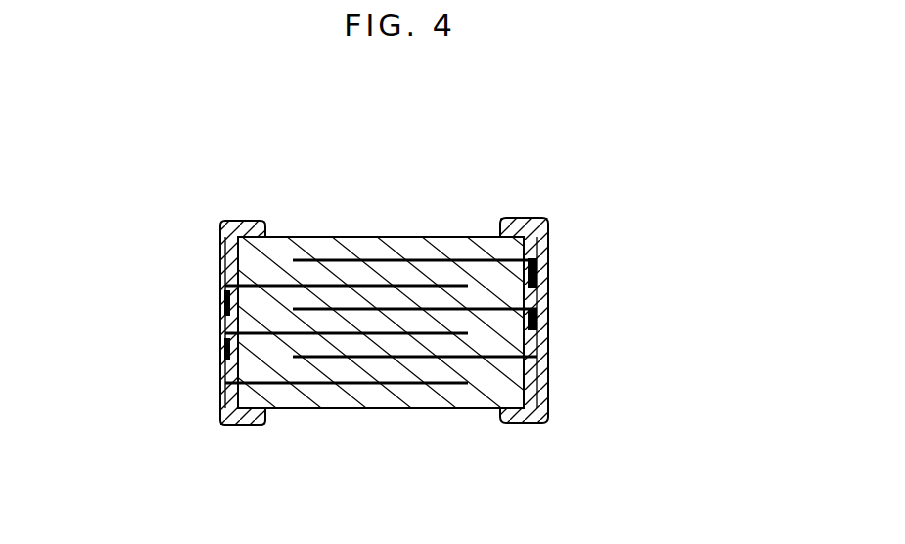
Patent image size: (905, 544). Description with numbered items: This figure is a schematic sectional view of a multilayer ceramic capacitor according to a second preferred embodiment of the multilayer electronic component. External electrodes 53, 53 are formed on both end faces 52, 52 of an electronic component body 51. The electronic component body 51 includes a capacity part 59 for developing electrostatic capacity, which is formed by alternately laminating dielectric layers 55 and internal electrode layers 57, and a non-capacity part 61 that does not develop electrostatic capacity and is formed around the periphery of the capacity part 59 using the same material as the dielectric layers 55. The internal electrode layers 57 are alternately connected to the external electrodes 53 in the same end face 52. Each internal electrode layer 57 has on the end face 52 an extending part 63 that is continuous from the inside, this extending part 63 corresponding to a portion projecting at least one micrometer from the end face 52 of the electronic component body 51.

The electronic component body 51 is at (93, 238).
The end face 52 is at (550, 373).
The external electrode 53 is at (535, 405).
The dielectric layer 55 is at (322, 340).
The internal electrode layer 57 is at (430, 340).
The capacity part 59 is at (160, 268).
The non-capacity part 61 is at (160, 238).
The extending part 63 is at (550, 348).